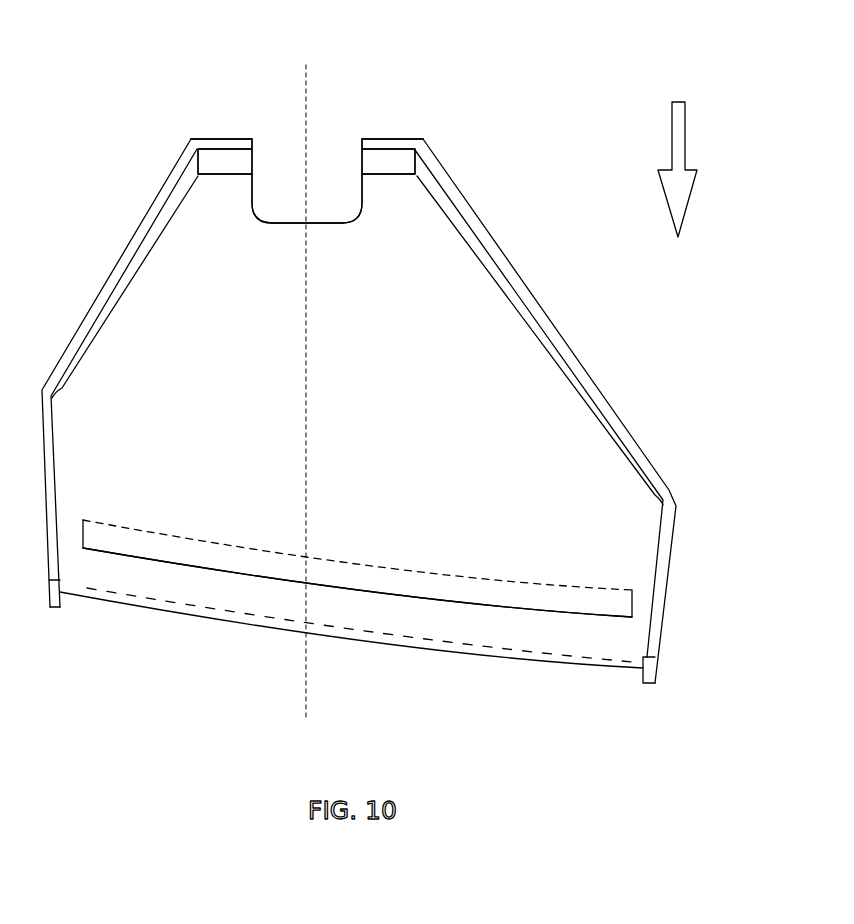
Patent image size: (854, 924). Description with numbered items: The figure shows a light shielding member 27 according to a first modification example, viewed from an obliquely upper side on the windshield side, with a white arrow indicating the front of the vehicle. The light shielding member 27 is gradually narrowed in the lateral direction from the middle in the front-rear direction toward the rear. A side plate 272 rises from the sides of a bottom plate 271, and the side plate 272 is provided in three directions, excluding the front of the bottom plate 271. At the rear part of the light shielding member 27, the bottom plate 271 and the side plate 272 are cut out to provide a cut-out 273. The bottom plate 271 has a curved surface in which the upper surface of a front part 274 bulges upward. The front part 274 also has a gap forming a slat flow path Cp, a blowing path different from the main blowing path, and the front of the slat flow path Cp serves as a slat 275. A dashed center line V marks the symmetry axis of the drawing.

The light shielding member 27 is at (588, 263).
The bottom plate 271 is at (462, 470).
The side plate 272 is at (220, 163).
The cut-out 273 is at (289, 173).
The front part 274 is at (520, 620).
The slat 275 is at (227, 603).
The slat flow path Cp is at (222, 567).
The vertical center line V is at (304, 376).